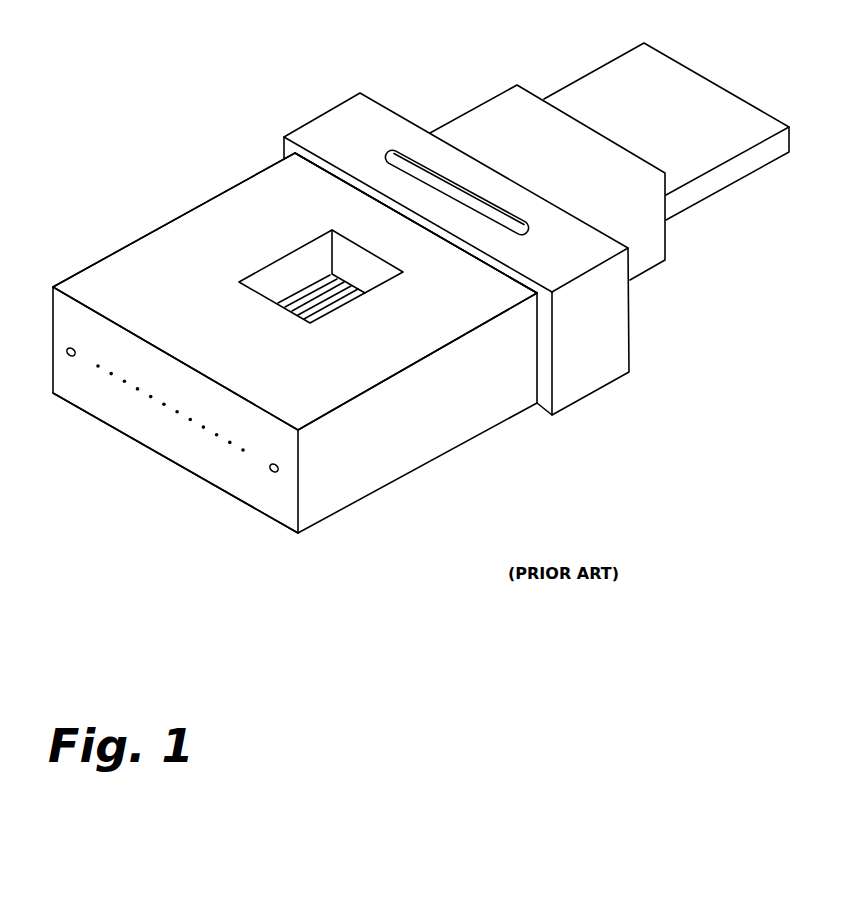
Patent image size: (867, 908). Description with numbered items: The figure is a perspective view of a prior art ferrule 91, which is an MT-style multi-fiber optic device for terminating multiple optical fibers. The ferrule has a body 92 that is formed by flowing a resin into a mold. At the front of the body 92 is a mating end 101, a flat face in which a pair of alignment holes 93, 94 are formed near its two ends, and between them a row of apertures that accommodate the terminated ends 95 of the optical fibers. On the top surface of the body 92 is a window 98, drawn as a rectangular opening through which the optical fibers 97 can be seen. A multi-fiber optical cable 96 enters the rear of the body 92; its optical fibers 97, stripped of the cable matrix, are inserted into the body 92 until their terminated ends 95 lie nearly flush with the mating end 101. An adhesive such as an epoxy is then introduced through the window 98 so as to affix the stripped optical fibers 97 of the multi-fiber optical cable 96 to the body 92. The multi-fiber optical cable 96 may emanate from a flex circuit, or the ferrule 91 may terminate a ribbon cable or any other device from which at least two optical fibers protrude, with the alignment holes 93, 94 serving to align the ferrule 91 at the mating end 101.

The ferrule 91 is at (208, 230).
The body 92 is at (137, 240).
The alignment hole 93 is at (67, 355).
The alignment hole 94 is at (272, 473).
The terminated ends of optical fibers 95 is at (98, 367).
The multi-fiber optical cable 96 is at (748, 173).
The optical fibers 97 is at (310, 287).
The window 98 is at (278, 280).
The mating end 101 is at (203, 483).